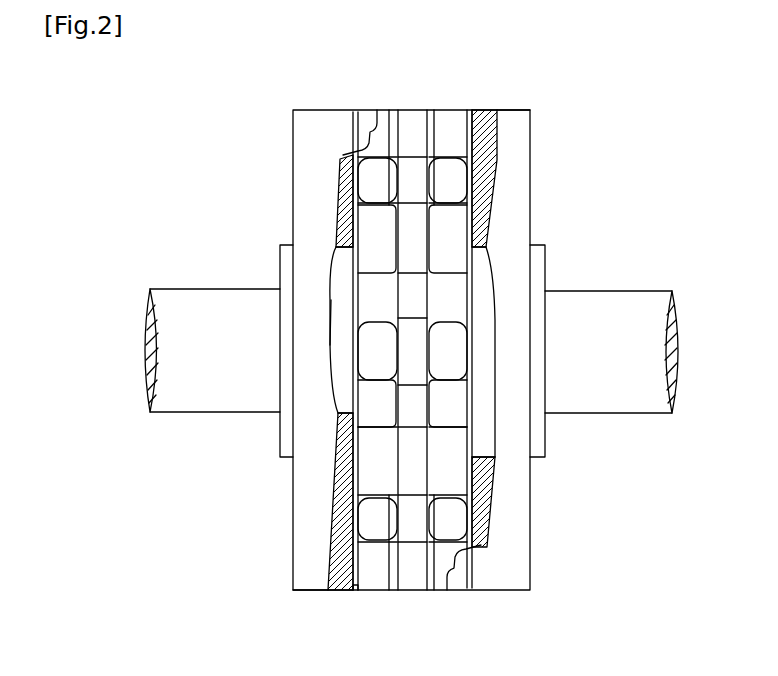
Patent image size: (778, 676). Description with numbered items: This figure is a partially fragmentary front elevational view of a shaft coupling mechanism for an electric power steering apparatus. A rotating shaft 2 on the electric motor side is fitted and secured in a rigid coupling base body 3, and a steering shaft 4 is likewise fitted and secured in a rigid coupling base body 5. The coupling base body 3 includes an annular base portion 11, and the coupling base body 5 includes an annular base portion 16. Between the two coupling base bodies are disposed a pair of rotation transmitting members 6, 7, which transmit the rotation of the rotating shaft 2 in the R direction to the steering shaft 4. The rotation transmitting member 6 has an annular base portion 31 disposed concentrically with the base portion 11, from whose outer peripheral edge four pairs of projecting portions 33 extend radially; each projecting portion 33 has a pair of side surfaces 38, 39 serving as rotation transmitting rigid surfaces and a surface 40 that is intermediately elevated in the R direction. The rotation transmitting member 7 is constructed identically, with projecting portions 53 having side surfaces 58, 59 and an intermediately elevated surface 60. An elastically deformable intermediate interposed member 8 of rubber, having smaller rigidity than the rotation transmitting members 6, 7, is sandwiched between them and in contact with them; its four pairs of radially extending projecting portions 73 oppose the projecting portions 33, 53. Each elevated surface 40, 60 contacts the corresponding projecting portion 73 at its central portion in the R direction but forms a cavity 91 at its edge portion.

The rotating shaft 2 is at (185, 306).
The coupling base body 3 is at (290, 584).
The steering shaft 4 is at (640, 310).
The coupling base body 5 is at (538, 110).
The rotation transmitting member 6 is at (373, 592).
The rotation transmitting member 7 is at (452, 108).
The intermediate interposed member 8 is at (411, 108).
The annular base portion 11 is at (302, 533).
The annular base portion 16 is at (520, 168).
The annular base portion 31 is at (338, 445).
The projecting portions 33 is at (383, 116).
The side surface 38 is at (372, 213).
The side surface 39 is at (340, 262).
The surface 40 is at (383, 118).
The projecting portions 53 is at (500, 112).
The side surface 58 is at (520, 242).
The side surface 59 is at (445, 300).
The surface 60 is at (434, 110).
The projecting portions 73 is at (414, 130).
The cavity 91 is at (368, 130).